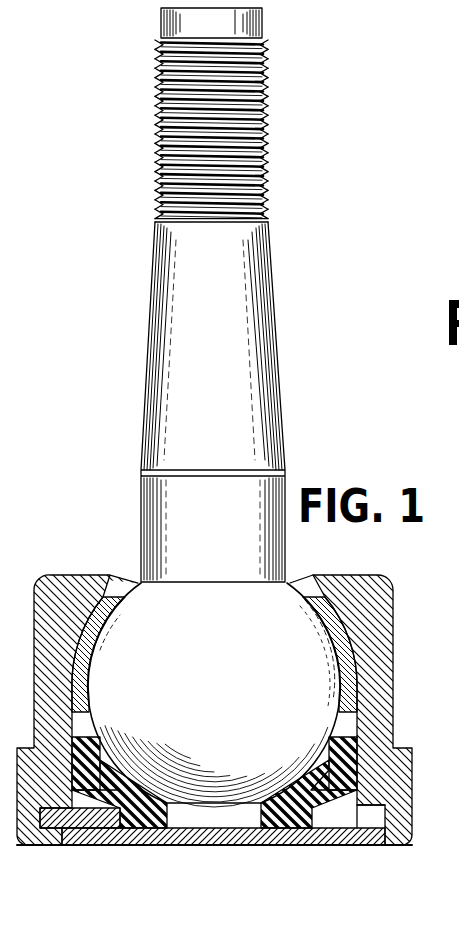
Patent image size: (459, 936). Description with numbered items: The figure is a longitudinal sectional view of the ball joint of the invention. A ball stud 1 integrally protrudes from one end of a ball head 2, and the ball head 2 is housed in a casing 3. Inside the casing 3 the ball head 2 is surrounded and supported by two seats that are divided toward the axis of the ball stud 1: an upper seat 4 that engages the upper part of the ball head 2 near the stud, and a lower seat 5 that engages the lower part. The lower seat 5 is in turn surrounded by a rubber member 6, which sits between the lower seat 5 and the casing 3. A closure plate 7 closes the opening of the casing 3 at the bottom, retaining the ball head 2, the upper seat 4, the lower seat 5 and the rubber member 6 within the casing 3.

The ball stud 1 is at (166, 425).
The ball head 2 is at (265, 675).
The casing 3 is at (380, 705).
The upper seat 4 is at (335, 624).
The lower seat 5 is at (345, 763).
The rubber member 6 is at (335, 800).
The closure plate 7 is at (300, 838).